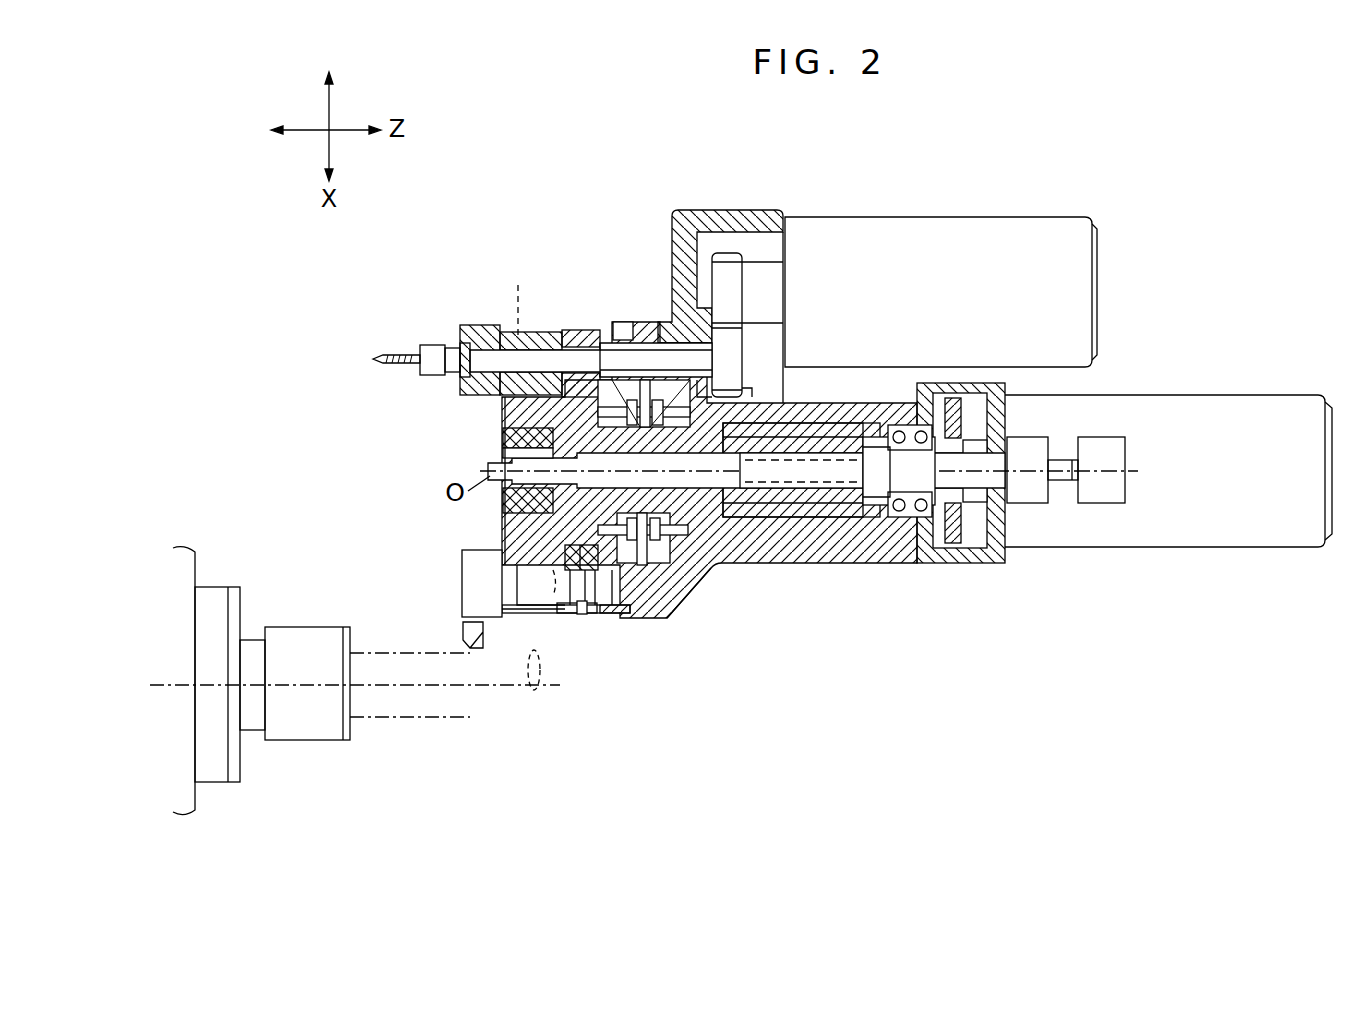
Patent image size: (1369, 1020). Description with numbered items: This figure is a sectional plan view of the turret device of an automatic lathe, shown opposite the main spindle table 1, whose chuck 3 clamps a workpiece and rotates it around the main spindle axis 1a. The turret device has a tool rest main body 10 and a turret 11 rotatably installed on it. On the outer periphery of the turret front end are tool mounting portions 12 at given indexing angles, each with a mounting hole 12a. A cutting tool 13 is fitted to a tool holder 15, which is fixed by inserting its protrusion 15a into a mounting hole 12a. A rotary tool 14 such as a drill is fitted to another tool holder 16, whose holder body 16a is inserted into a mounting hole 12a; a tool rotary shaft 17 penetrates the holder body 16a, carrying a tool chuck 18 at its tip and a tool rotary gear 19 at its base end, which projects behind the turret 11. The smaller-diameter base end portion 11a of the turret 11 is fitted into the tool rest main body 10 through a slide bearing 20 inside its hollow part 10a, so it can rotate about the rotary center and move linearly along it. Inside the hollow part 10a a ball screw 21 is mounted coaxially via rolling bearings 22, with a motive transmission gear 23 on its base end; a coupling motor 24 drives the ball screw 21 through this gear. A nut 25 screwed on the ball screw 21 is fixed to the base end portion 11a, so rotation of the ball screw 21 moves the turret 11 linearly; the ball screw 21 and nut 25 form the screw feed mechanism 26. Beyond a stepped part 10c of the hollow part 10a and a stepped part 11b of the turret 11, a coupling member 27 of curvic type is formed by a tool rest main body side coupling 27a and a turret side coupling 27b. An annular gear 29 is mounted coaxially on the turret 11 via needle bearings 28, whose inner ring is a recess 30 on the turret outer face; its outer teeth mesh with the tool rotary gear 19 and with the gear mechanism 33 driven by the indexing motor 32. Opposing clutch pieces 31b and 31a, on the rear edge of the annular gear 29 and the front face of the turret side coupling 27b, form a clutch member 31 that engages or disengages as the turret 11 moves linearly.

The main spindle table 1 is at (198, 566).
The main spindle axis 1a is at (395, 688).
The chuck 3 is at (306, 742).
The tool rest main body 10 is at (845, 572).
The hollow part 10a is at (875, 506).
The stepped part 10c is at (662, 386).
The turret 11 is at (516, 620).
The base end portion 11a is at (722, 508).
The stepped part 11b is at (635, 345).
The tool mounting portion 12 is at (490, 387).
The mounting hole 12a is at (553, 757).
The cutting tool 13 is at (463, 636).
The rotary tool 14 is at (400, 355).
The tool holder 15 is at (452, 582).
The protrusion 15a is at (503, 613).
The tool holder 16 is at (468, 318).
The holder body 16a is at (490, 330).
The tool rotary shaft 17 is at (545, 352).
The tool chuck 18 is at (432, 376).
The tool rotary gear 19 is at (575, 340).
The slide bearing 20 is at (748, 506).
The ball screw 21 is at (766, 510).
The rolling bearings 22 is at (907, 514).
The motive transmission gear 23 is at (953, 548).
The coupling motor 24 is at (1115, 549).
The nut 25 is at (800, 508).
The screw feed mechanism 26 is at (850, 654).
The coupling member 27 is at (648, 680).
The tool rest main body side coupling 27a is at (662, 560).
The turret side coupling 27b is at (630, 562).
The needle bearings 28 is at (568, 613).
The annular gear 29 is at (590, 606).
The recess 30 is at (566, 571).
The clutch member 31 is at (585, 722).
The clutch piece 31a is at (625, 614).
The clutch piece 31b is at (612, 614).
The indexing motor 32 is at (950, 217).
The gear mechanism 33 is at (712, 272).